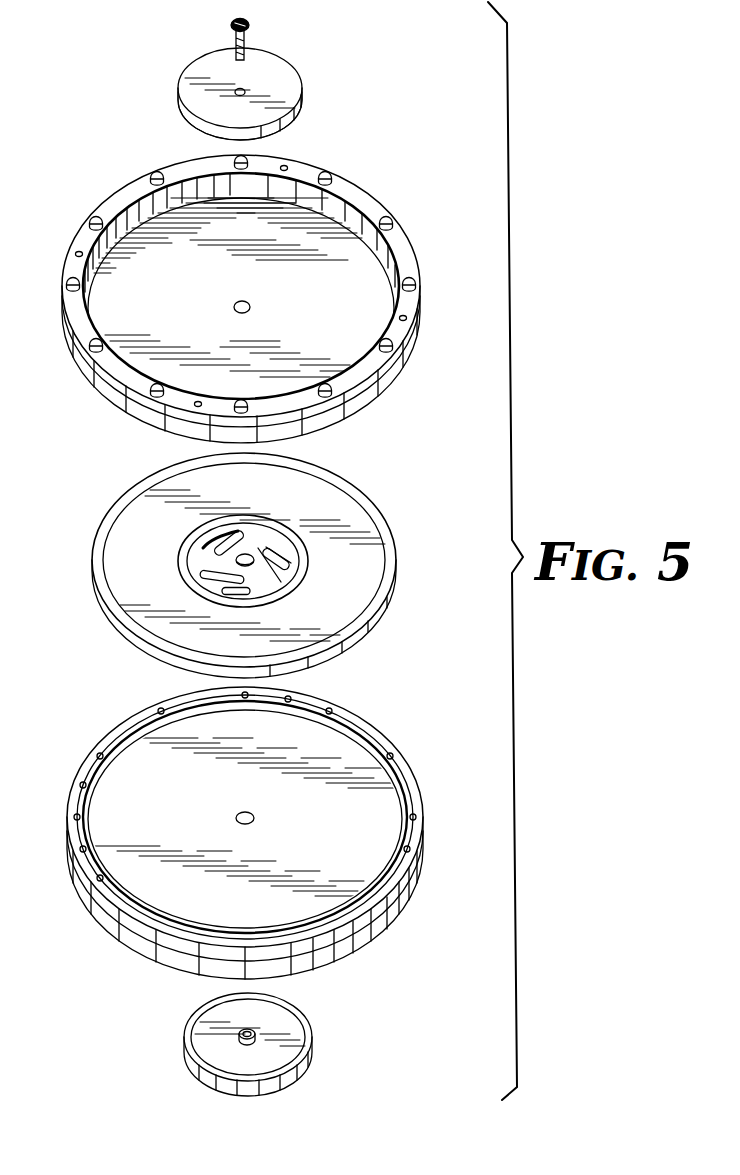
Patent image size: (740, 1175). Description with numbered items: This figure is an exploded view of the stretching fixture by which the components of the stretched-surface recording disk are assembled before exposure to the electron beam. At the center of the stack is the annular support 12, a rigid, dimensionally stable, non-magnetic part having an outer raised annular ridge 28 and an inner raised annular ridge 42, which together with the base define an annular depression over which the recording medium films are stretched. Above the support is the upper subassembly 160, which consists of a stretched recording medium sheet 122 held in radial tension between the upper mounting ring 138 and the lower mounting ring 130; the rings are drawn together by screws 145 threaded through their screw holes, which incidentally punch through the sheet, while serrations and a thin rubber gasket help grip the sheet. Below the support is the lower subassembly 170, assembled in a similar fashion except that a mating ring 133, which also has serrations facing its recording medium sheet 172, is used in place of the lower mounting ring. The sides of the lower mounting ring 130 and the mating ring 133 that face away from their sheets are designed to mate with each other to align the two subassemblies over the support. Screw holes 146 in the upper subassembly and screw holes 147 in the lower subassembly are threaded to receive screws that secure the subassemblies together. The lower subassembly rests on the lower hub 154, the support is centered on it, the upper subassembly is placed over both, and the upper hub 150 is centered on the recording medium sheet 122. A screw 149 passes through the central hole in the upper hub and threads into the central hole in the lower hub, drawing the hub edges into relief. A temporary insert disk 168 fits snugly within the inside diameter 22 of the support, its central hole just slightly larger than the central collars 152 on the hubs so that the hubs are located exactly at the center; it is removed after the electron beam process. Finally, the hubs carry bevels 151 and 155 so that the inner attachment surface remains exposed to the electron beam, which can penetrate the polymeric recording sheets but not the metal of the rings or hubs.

The annular support 12 is at (232, 565).
The inside diameter 22 is at (233, 532).
The outer raised annular ridge 28 is at (123, 632).
The inner raised annular ridge 42 is at (180, 549).
The recording medium sheet 122 is at (120, 270).
The lower mounting ring 130 is at (378, 388).
The mating ring 133 is at (108, 903).
The upper mounting ring 138 is at (112, 382).
The screws 145 is at (97, 218).
The screw holes 146 is at (290, 165).
The screw holes 147 is at (292, 700).
The screw 149 is at (248, 32).
The upper hub 150 is at (283, 76).
The bevel 151 is at (178, 100).
The central collars 152 is at (238, 1034).
The lower hub 154 is at (308, 1043).
The bevel 155 is at (249, 1059).
The upper subassembly 160 is at (239, 275).
The temporary insert disk 168 is at (262, 540).
The lower subassembly 170 is at (254, 805).
The recording medium sheet 172 is at (142, 755).